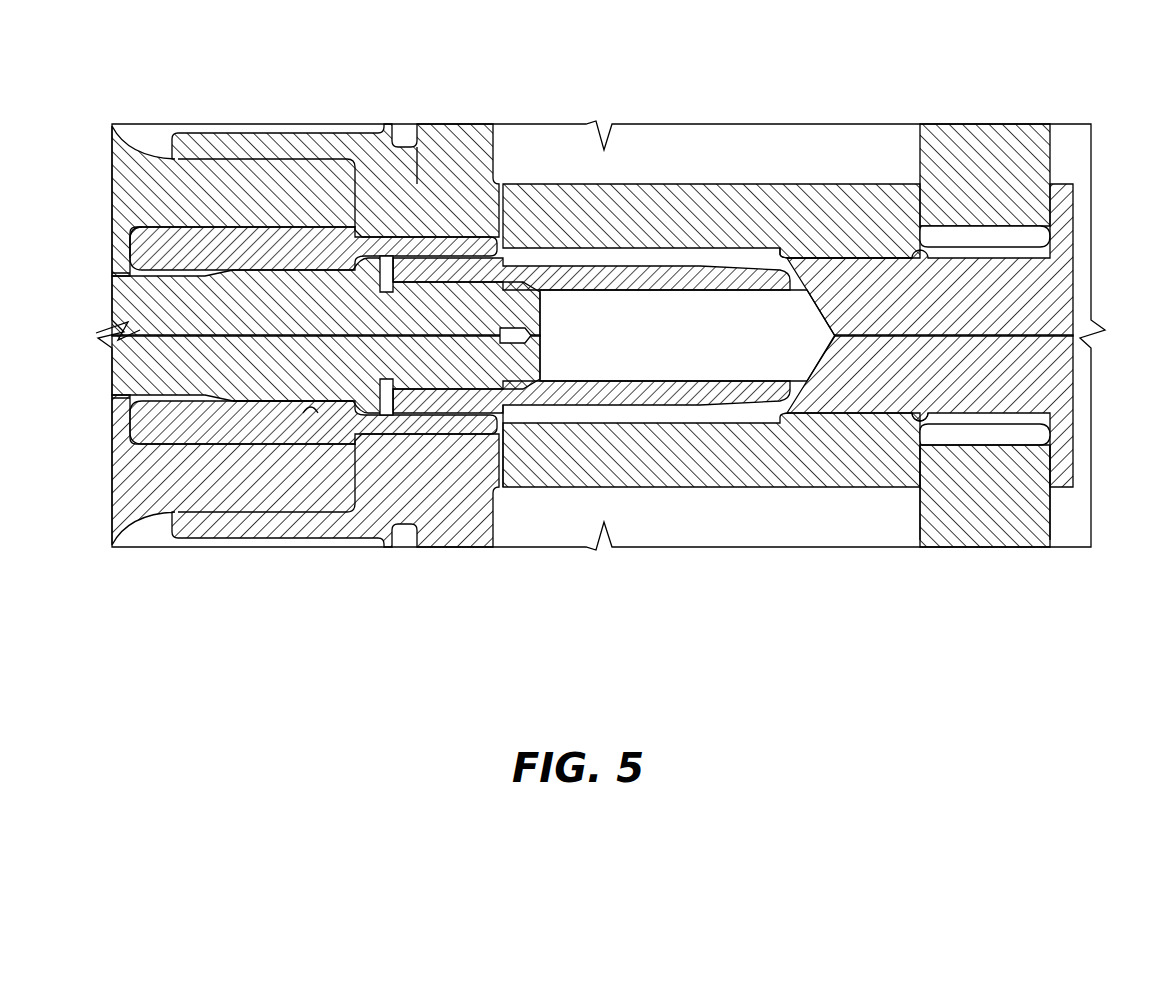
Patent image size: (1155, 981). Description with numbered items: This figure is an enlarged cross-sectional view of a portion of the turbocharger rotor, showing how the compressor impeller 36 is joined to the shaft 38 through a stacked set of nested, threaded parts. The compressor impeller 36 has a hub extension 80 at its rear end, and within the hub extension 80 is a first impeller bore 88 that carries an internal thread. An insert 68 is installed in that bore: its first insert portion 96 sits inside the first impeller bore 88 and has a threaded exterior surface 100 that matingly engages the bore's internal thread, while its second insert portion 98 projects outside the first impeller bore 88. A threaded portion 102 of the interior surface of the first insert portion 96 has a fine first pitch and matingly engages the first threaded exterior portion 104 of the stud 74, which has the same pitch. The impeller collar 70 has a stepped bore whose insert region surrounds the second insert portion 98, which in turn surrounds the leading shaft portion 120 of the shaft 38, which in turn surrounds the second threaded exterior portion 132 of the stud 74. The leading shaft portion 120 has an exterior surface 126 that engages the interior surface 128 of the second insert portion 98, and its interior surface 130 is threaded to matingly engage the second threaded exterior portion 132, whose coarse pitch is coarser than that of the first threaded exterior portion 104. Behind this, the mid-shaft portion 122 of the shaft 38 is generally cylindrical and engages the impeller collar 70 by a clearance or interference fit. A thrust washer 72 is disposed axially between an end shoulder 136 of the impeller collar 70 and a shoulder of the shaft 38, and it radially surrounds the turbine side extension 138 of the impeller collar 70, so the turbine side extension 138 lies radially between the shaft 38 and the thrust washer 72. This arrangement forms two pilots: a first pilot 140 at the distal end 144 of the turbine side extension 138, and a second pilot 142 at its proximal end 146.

The compressor impeller 36 is at (130, 172).
The shaft 38 is at (1057, 298).
The insert 68 is at (130, 268).
The impeller collar 70 is at (700, 208).
The thrust washer 72 is at (1013, 535).
The stud 74 is at (143, 322).
The hub extension 80 is at (218, 173).
The first impeller bore 88 is at (181, 458).
The first insert portion 96 is at (281, 240).
The second insert portion 98 is at (405, 235).
The exterior surface 100 is at (226, 432).
The threaded portion 102 is at (268, 412).
The first threaded exterior portion 104 is at (311, 413).
The leading shaft portion 120 is at (443, 267).
The mid-shaft portion 122 is at (862, 273).
The exterior surface 126 is at (468, 425).
The interior surface 128 is at (408, 412).
The interior surface 130 is at (505, 237).
The second threaded exterior portion 132 is at (520, 410).
The end shoulder 136 is at (926, 203).
The turbine side extension 138 is at (1013, 236).
The first pilot 140 is at (1033, 450).
The second pilot 142 is at (930, 470).
The distal end 144 is at (1047, 424).
The proximal end 146 is at (993, 485).